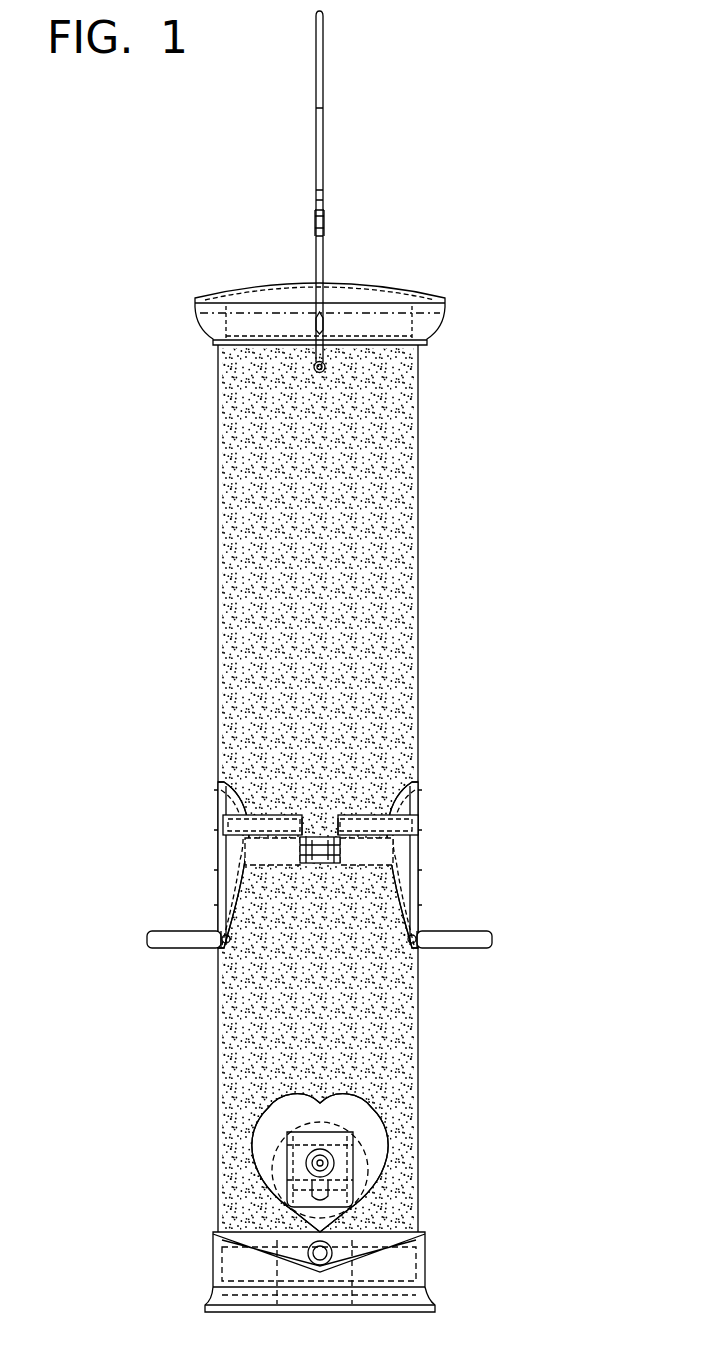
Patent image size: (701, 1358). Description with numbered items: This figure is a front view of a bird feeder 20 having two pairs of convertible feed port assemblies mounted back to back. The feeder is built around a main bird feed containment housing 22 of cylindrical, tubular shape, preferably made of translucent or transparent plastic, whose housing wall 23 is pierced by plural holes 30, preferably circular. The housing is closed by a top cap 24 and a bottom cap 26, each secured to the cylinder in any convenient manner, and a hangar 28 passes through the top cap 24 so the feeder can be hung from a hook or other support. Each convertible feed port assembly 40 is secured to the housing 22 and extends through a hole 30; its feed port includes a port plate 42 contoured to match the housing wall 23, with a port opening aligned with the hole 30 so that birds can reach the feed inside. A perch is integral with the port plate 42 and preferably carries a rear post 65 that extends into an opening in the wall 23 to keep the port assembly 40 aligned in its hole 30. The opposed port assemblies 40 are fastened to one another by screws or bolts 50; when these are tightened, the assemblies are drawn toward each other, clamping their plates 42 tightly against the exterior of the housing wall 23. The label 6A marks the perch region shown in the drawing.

The bird feeder 20 is at (470, 572).
The bird feed containment housing 22 is at (418, 471).
The housing wall 23 is at (417, 655).
The top cap 24 is at (433, 300).
The bottom cap 26 is at (426, 1251).
The hanger rod 28 is at (324, 38).
The hole 30 is at (236, 848).
The convertible feed port assembly 40 is at (210, 785).
The port plate 42 is at (222, 788).
The screws or bolts 50 is at (318, 830).
The rear post 65 is at (414, 939).
The perch end 6A is at (483, 946).